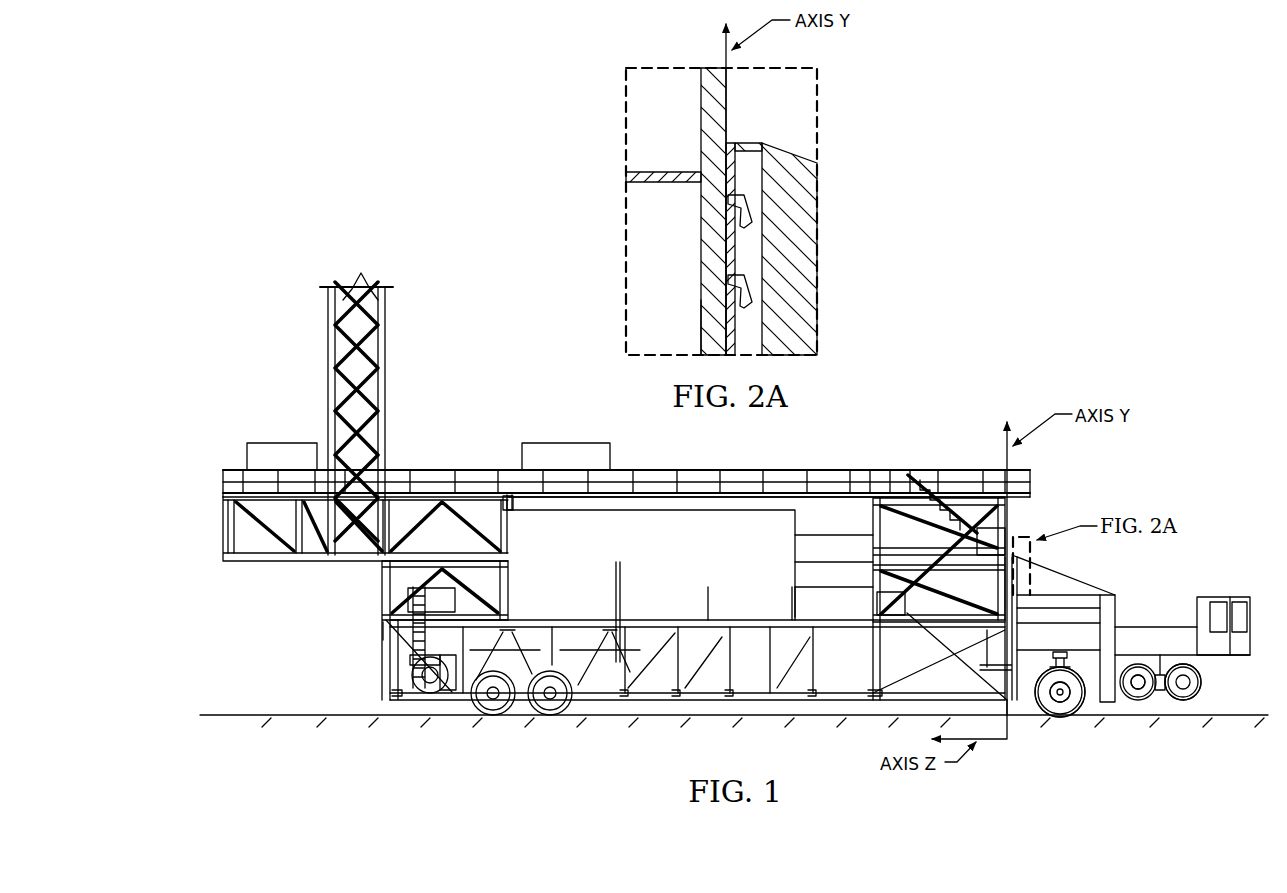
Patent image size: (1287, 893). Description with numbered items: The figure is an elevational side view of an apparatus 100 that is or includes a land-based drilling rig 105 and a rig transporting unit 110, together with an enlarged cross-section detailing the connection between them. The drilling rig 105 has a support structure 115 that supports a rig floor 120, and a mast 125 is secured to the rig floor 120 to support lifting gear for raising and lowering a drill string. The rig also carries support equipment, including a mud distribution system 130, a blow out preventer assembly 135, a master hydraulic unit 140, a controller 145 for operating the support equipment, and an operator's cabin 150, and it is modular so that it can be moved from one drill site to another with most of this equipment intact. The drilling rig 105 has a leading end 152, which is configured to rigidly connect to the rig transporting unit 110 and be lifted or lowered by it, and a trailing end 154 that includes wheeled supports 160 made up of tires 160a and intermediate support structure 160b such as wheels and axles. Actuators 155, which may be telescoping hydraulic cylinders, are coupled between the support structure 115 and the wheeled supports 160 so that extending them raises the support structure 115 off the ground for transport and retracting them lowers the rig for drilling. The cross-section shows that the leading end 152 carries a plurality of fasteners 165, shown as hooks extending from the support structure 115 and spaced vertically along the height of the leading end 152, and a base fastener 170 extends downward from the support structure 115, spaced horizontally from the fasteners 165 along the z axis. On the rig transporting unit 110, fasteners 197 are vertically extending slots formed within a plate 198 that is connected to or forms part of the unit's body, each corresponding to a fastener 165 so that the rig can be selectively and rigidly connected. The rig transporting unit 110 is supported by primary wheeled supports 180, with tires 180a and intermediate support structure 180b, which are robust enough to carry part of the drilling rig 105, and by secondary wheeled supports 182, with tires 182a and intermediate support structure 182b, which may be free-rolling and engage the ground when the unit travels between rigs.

In FIG. 1, the apparatus 100 is at (414, 258).
In FIG. 1, the land-based drilling rig 105 is at (223, 548).
In FIG. 2A, the land-based drilling rig 105 is at (700, 97).
In FIG. 1, the rig transporting unit 110 is at (1222, 597).
In FIG. 2A, the rig transporting unit 110 is at (812, 190).
In FIG. 1, the support structure 115 is at (382, 588).
In FIG. 2A, the support structure 115 is at (700, 341).
In FIG. 1, the rig floor 120 is at (858, 469).
In FIG. 1, the mast 125 is at (327, 337).
In FIG. 1, the mud distribution system 130 is at (795, 585).
In FIG. 1, the blow out preventer assembly 135 is at (280, 443).
In FIG. 1, the master hydraulic unit 140 is at (795, 560).
In FIG. 1, the controller 145 is at (795, 533).
In FIG. 1, the operator's cabin 150 is at (566, 443).
In FIG. 1, the leading end 152 is at (1008, 522).
In FIG. 2A, the leading end 152 is at (700, 137).
In FIG. 1, the trailing end 154 is at (382, 630).
In FIG. 1, the actuators 155 is at (522, 655).
In FIG. 1, the wheeled support 160 is at (398, 678).
In FIG. 1, the tires 160a is at (410, 656).
In FIG. 1, the intermediate support structure 160b is at (435, 700).
In FIG. 2A, the fasteners 165 is at (750, 213).
In FIG. 1, the base fastener 170 is at (1023, 702).
In FIG. 1, the primary wheeled supports 180 is at (1072, 662).
In FIG. 1, the tires 180a is at (1085, 703).
In FIG. 1, the intermediate support structure 180b is at (1060, 702).
In FIG. 1, the secondary wheeled supports 182 is at (1207, 683).
In FIG. 1, the tires 182a is at (1195, 698).
In FIG. 1, the intermediate support structure 182b is at (1160, 692).
In FIG. 2A, the fasteners 197 is at (728, 190).
In FIG. 2A, the plate 198 is at (731, 142).